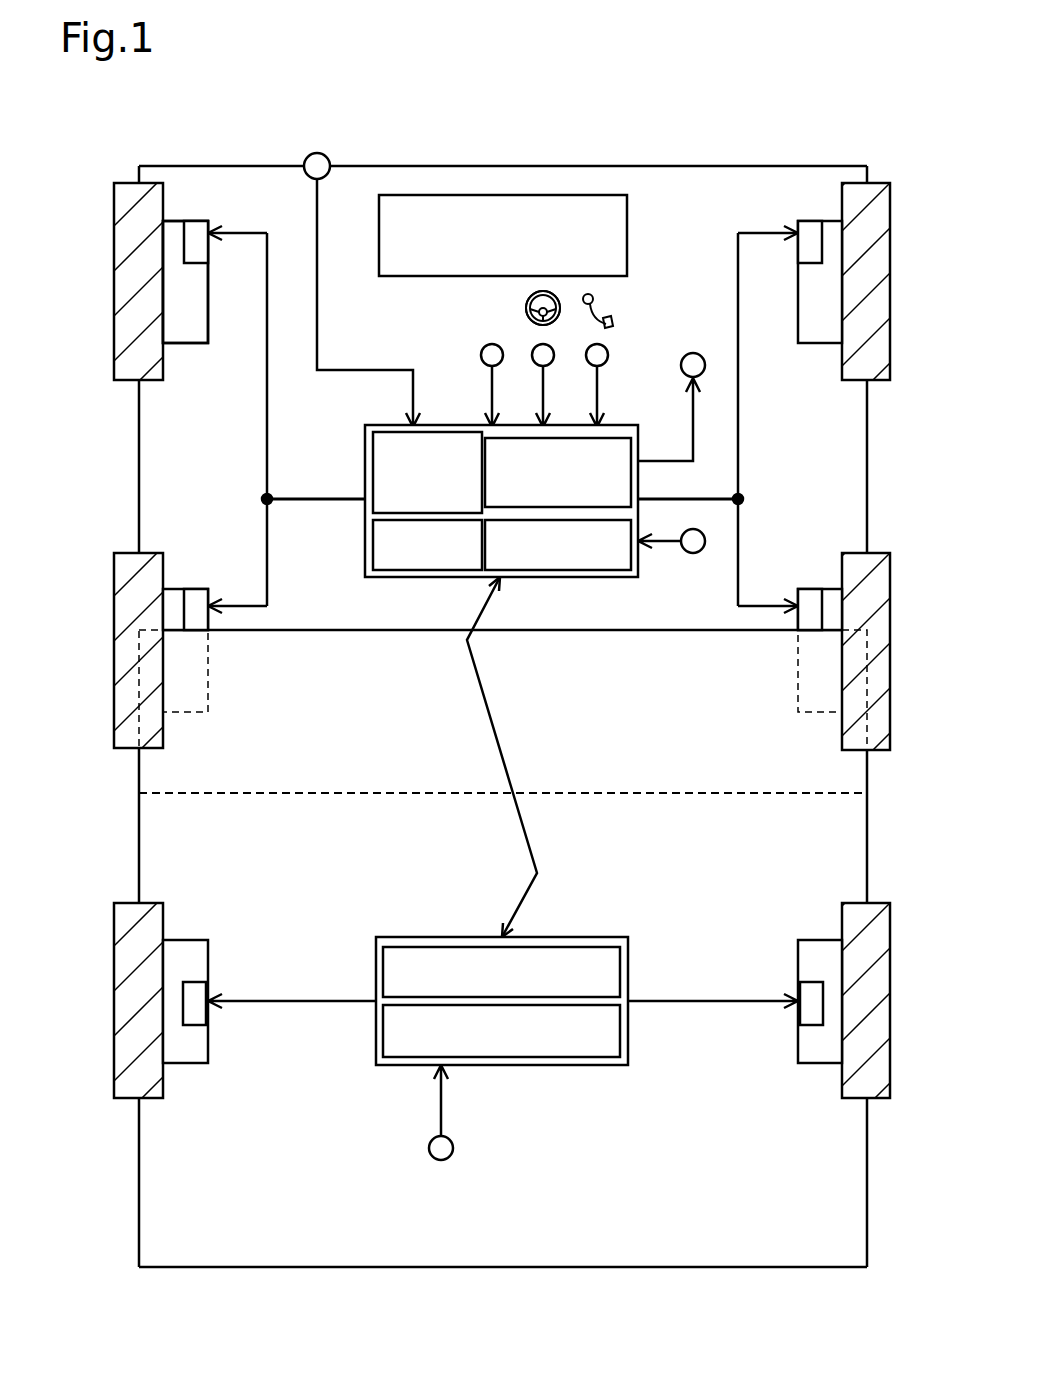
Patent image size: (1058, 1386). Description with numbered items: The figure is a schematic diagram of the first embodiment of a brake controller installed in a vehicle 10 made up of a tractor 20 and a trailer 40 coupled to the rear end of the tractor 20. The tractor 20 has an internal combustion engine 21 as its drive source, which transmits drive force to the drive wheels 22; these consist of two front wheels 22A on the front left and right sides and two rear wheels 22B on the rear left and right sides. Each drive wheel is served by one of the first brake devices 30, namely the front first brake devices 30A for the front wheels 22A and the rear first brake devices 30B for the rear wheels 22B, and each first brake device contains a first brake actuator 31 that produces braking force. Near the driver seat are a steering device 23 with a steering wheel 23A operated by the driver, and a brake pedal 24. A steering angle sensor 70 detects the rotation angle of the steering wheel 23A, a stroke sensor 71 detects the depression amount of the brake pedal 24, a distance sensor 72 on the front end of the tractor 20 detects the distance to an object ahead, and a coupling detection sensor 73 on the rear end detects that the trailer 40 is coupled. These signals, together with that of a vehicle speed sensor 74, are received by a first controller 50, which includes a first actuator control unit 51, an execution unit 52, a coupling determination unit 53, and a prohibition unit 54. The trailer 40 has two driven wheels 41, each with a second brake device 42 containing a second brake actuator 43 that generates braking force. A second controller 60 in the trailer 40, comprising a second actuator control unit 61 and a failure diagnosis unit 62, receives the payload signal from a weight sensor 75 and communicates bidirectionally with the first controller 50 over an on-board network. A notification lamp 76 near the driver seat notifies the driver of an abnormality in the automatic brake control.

The vehicle 10 is at (820, 118).
The tractor 20 is at (537, 166).
The internal combustion engine 21 is at (627, 233).
The drive wheels 22 is at (503, 690).
The front wheels 22A is at (114, 240).
The rear wheels 22B is at (114, 605).
The steering device 23 is at (525, 300).
The steering wheel 23A is at (501, 315).
The brake pedal 24 is at (600, 297).
The first brake devices 30 is at (185, 282).
The front first brake devices 30A is at (188, 345).
The rear first brake devices 30B is at (830, 588).
The first brake actuator 31 is at (195, 228).
The trailer 40 is at (503, 1267).
The driven wheels 41 is at (114, 960).
The second brake devices 42 is at (185, 940).
The second brake actuator 43 is at (196, 985).
The first controller 50 is at (470, 499).
The first actuator control unit 51 is at (373, 470).
The execution unit 52 is at (373, 540).
The coupling determination unit 53 is at (613, 430).
The prohibition unit 54 is at (608, 575).
The second controller 60 is at (530, 974).
The second actuator control unit 61 is at (628, 969).
The failure diagnosis unit 62 is at (628, 1030).
The steering angle sensor 70 is at (535, 363).
The stroke sensor 71 is at (588, 363).
The distance sensor 72 is at (317, 153).
The coupling detection sensor 73 is at (694, 553).
The vehicle speed sensor 74 is at (483, 363).
The weight sensor 75 is at (441, 1160).
The notification lamp 76 is at (694, 352).